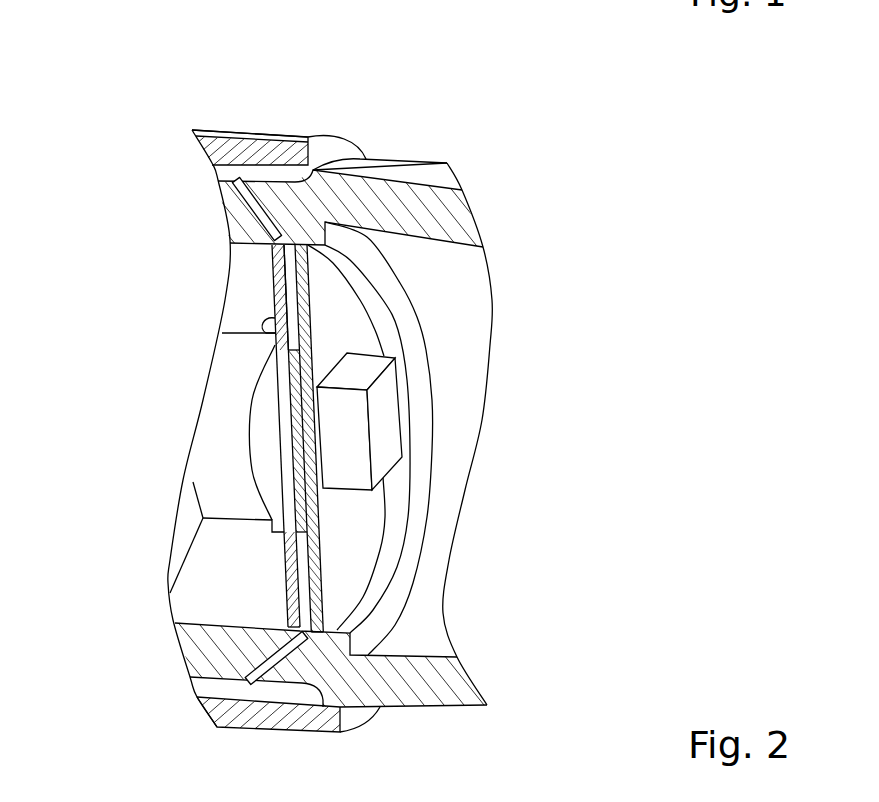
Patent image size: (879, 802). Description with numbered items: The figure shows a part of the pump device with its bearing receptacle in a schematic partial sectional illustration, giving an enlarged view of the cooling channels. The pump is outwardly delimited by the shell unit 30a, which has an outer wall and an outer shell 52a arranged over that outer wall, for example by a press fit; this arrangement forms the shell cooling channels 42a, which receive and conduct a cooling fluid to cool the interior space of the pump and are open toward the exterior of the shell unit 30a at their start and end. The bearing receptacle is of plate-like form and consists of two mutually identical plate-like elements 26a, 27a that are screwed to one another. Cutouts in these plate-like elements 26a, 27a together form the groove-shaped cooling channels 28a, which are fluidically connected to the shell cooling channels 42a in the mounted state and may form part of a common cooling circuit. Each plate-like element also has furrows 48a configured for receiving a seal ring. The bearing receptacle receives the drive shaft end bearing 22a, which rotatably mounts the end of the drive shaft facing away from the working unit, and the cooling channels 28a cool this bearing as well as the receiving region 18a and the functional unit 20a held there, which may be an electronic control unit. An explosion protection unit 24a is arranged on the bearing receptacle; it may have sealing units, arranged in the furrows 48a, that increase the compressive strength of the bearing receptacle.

The shell unit 30a is at (227, 122).
The explosion protection unit 24a is at (302, 122).
The outer shell 52a is at (257, 148).
The shell cooling channels 42a is at (238, 207).
The furrows 48a is at (232, 242).
The drive shaft end bearing 22a is at (218, 437).
The plate-like element 26a is at (287, 590).
The functional unit 20a is at (383, 407).
The receiving region 18a is at (348, 511).
The cooling channels 28a is at (311, 552).
The plate-like element 27a is at (326, 603).